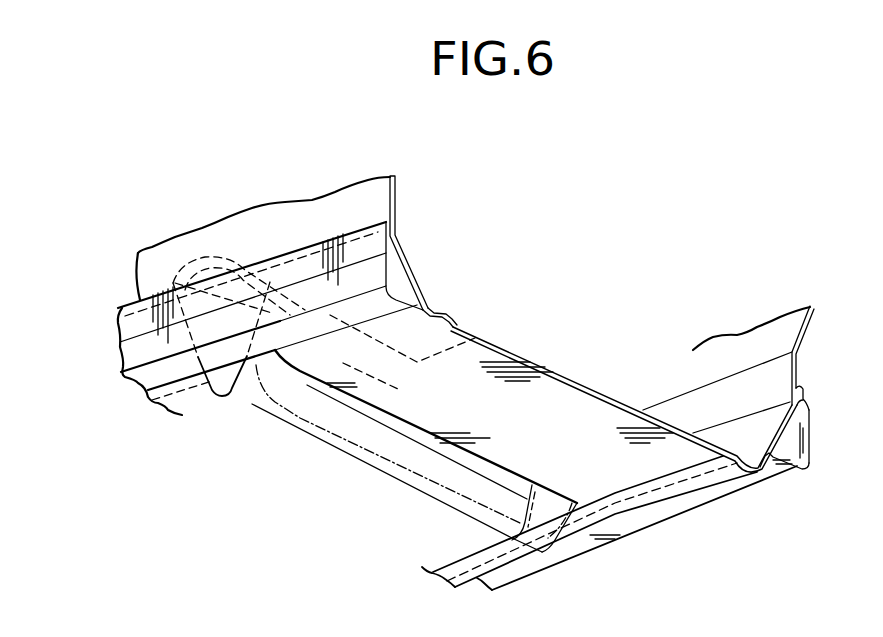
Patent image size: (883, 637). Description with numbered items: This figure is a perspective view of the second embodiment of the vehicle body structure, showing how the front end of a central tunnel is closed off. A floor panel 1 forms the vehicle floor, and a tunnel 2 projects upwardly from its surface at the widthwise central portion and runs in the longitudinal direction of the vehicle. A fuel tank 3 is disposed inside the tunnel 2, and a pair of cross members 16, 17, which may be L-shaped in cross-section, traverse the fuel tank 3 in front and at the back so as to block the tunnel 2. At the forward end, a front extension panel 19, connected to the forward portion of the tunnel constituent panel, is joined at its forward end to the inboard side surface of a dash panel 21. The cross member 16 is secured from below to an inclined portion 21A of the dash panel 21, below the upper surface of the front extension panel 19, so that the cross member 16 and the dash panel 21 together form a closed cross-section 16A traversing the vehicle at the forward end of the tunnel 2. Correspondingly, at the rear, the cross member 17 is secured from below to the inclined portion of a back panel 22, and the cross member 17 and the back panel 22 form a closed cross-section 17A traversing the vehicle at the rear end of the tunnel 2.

The floor panel 1 is at (580, 390).
The tunnel 2 is at (247, 392).
The fuel tank 3 is at (472, 339).
The cross member 16 is at (377, 253).
The closed cross-section 16A is at (400, 278).
The cross member 17 is at (792, 469).
The closed cross-section 17A is at (790, 435).
The front extension panel 19 is at (271, 285).
The dash panel 21 is at (323, 212).
The inclined portion 21A is at (424, 291).
The back panel 22 is at (806, 333).